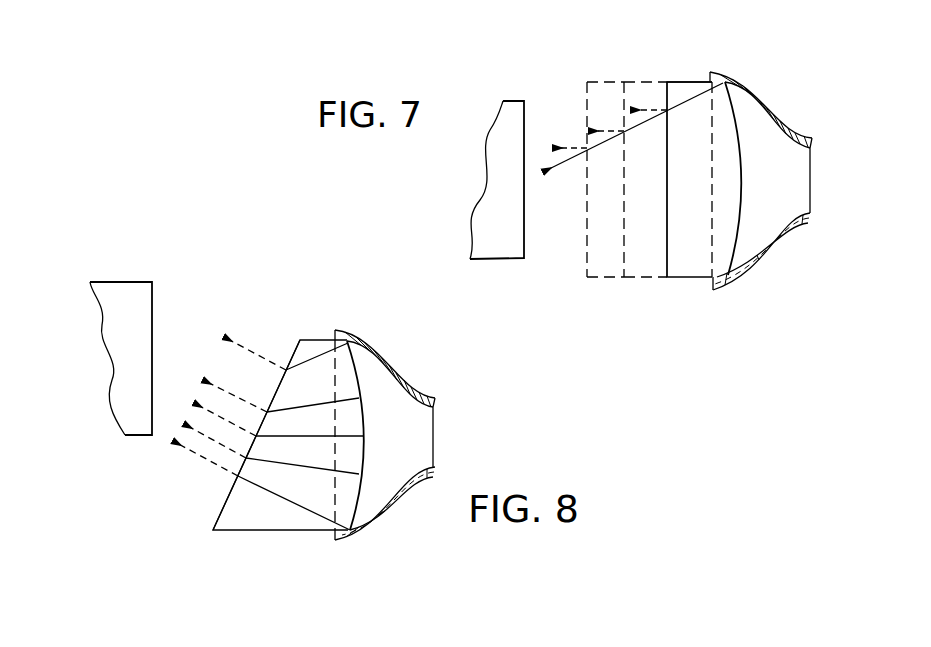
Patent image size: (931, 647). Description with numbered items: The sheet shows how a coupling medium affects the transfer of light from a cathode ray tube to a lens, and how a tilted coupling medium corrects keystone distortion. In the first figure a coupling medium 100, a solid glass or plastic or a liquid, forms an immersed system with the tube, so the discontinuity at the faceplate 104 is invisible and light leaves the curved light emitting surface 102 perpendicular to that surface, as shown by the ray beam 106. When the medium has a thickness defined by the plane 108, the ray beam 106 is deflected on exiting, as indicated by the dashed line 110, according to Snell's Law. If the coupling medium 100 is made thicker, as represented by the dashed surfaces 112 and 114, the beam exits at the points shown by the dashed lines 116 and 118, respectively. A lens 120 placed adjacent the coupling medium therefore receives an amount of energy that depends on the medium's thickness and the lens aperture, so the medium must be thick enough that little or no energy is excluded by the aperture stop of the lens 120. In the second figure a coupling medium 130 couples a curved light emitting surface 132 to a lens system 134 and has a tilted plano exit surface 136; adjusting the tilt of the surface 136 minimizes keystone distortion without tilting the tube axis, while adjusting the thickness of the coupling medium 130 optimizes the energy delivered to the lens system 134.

In FIG. 7, the coupling medium 100 is at (686, 263).
In FIG. 7, the light emitting surface 102 is at (741, 203).
In FIG. 7, the faceplate 104 is at (710, 253).
In FIG. 7, the ray beam 106 is at (695, 95).
In FIG. 7, the plane 108 is at (668, 247).
In FIG. 7, the dashed line 110 is at (651, 110).
In FIG. 7, the dashed surface 112 is at (626, 248).
In FIG. 7, the dashed surface 114 is at (587, 247).
In FIG. 7, the dashed line 116 is at (603, 127).
In FIG. 7, the dashed line 118 is at (568, 148).
In FIG. 7, the lens 120 is at (522, 260).
In FIG. 8, the coupling medium 130 is at (277, 518).
In FIG. 8, the light emitting surface 132 is at (360, 477).
In FIG. 8, the lens system 134 is at (132, 293).
In FIG. 8, the tilted surface 136 is at (222, 508).